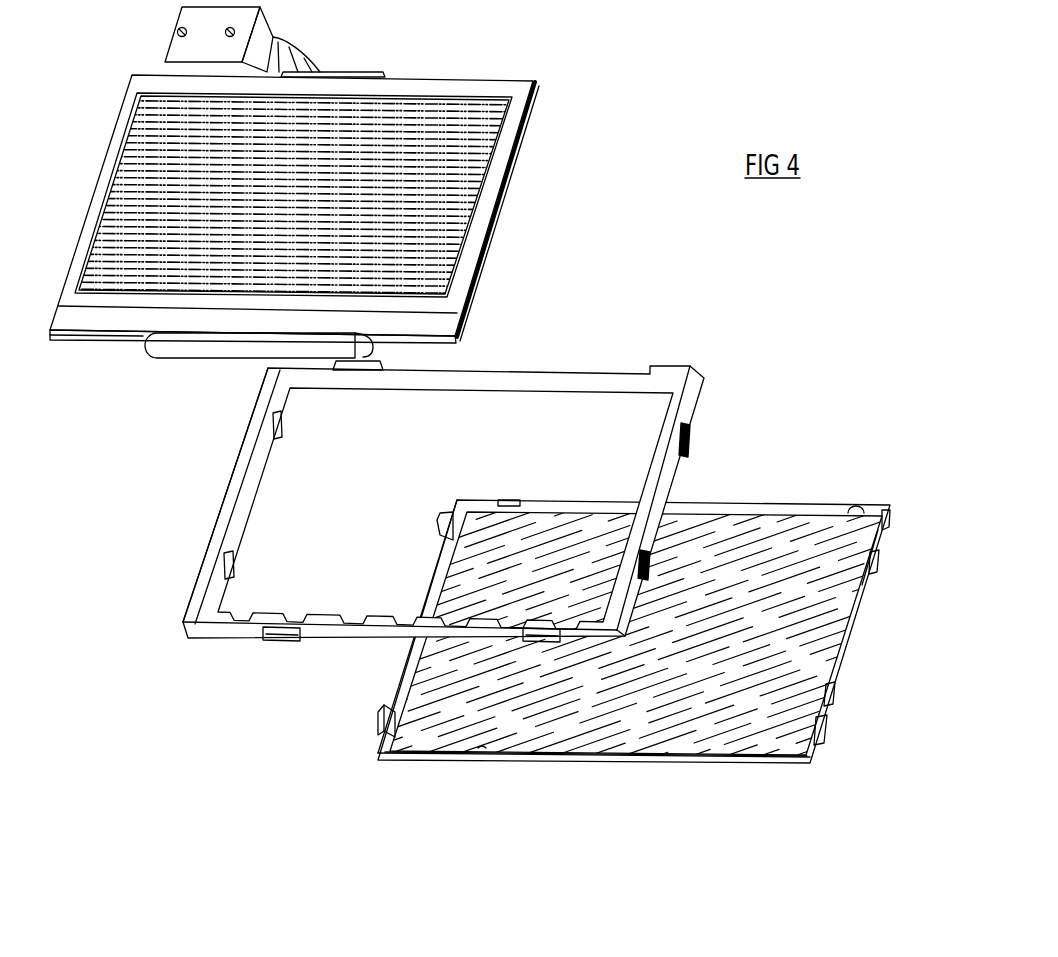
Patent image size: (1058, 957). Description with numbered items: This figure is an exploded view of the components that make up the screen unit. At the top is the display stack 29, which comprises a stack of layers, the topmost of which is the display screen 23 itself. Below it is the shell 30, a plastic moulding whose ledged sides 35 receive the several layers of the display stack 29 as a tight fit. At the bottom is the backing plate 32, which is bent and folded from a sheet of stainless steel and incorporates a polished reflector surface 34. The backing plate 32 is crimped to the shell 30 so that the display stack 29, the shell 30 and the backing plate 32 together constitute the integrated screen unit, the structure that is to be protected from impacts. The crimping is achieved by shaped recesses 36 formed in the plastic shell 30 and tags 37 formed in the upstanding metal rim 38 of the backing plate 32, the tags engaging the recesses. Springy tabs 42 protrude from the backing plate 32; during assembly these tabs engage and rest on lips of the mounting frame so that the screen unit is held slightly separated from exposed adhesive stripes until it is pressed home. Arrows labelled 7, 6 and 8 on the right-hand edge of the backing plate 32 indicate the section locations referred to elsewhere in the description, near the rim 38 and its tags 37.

The display stack 29 is at (313, 213).
The display screen 23 is at (163, 267).
The shell 30 is at (459, 508).
The ledged sides 35 is at (233, 485).
The shaped recesses 36 is at (694, 443).
The backing plate 32 is at (623, 620).
The tags 37 is at (873, 567).
The plate edge 7 is at (861, 638).
The side tab 6 is at (844, 692).
The lower side tab 8 is at (836, 725).
The upstanding metal rim 38 is at (482, 749).
The polished reflector surface 34 is at (663, 718).
The springy tabs 42 is at (375, 713).